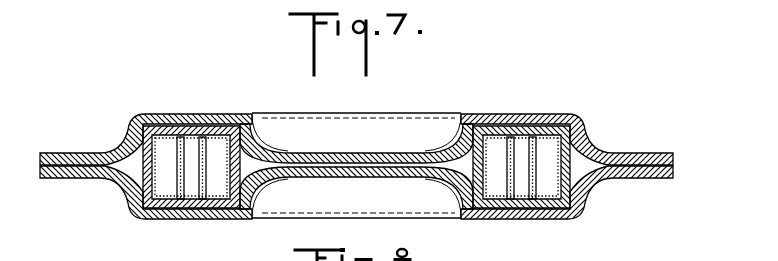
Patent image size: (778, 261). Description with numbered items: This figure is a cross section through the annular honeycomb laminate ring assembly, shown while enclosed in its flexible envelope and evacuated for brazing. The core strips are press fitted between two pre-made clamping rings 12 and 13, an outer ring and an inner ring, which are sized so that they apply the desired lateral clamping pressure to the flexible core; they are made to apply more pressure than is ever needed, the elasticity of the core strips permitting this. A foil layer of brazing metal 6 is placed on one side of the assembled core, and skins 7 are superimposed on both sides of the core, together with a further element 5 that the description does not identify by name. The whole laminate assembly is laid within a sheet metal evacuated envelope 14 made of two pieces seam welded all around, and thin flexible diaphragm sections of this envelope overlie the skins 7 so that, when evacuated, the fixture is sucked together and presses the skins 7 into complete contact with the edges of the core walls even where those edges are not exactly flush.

The winding bars 5 is at (178, 192).
The foil layer of brazing metal 6 is at (190, 140).
The skins 7 is at (160, 127).
The ring 12 is at (240, 155).
The ring 13 is at (130, 188).
The sheet metal evacuated envelope 14 is at (494, 115).